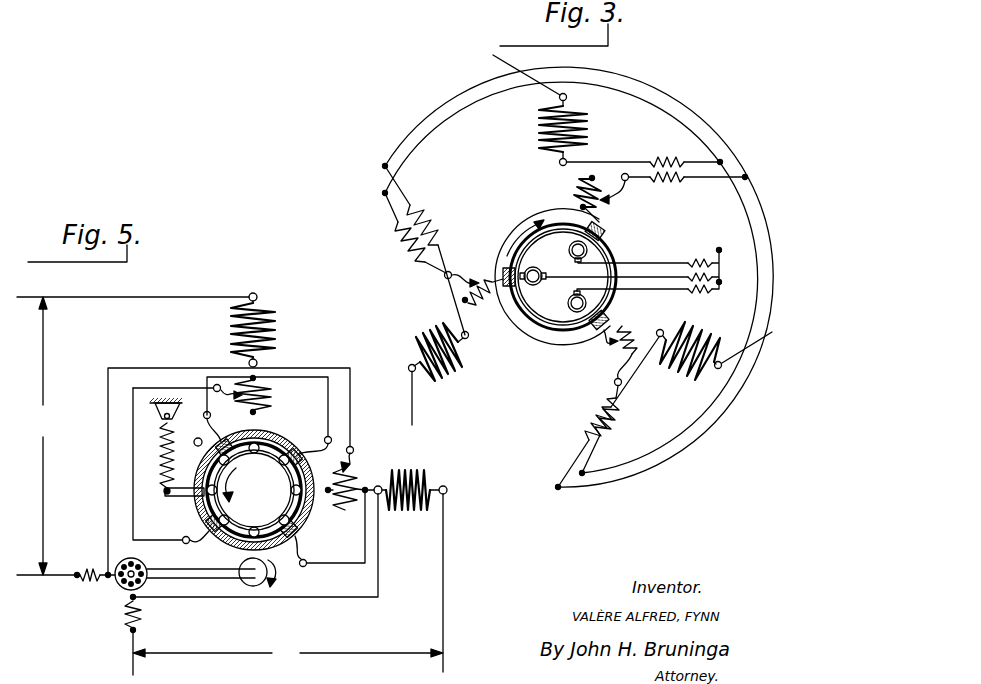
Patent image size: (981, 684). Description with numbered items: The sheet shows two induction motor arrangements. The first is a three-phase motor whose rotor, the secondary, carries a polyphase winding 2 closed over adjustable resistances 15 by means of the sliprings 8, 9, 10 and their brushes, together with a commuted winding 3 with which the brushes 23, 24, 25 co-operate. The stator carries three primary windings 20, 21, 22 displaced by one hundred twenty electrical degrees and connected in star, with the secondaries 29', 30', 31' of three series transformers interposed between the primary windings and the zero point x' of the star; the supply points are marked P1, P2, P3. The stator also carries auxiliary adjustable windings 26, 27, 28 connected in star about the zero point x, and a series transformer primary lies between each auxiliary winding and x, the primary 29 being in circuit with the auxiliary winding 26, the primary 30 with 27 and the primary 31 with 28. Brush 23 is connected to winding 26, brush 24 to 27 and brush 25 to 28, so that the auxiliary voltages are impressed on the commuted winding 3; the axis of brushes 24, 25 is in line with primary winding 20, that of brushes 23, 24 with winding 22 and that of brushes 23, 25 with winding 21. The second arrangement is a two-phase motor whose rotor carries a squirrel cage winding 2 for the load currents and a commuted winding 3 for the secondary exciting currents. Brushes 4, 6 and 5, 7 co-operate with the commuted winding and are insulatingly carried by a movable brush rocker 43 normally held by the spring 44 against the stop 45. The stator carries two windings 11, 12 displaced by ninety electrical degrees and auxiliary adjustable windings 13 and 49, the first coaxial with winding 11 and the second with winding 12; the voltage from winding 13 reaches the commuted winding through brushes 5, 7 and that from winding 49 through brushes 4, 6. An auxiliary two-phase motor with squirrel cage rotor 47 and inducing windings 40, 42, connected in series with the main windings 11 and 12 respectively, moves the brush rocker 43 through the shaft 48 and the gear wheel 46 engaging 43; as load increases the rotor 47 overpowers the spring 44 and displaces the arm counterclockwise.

In FIG. 3, the power terminal / point P1 is at (515, 71).
In FIG. 5, the power terminal / point P1 is at (37, 436).
In FIG. 3, the power terminal / point P2 is at (747, 350).
In FIG. 5, the power terminal / point P2 is at (288, 653).
In FIG. 3, the power terminal / point P3 is at (422, 398).
In FIG. 3, the zero point of auxiliary star x is at (578, 278).
In FIG. 3, the zero point of primary star x' is at (570, 278).
In FIG. 3, the rotor winding 2 is at (607, 250).
In FIG. 5, the rotor winding 2 is at (238, 524).
In FIG. 3, the commuted winding 3 is at (548, 331).
In FIG. 5, the commuted winding 3 is at (197, 504).
In FIG. 5, the brush 4 is at (296, 452).
In FIG. 5, the brush 5 is at (230, 443).
In FIG. 5, the brush 6 is at (206, 527).
In FIG. 5, the brush 7 is at (290, 546).
In FIG. 3, the slipring 8 is at (570, 251).
In FIG. 3, the slipring 9 is at (533, 284).
In FIG. 3, the slipring 10 is at (568, 304).
In FIG. 5, the main motor winding 11 is at (410, 571).
In FIG. 5, the main motor winding 12 is at (265, 330).
In FIG. 5, the auxiliary adjustable winding 13 is at (356, 478).
In FIG. 3, the adjustable resistances 15 is at (643, 271).
In FIG. 3, the primary winding 20 is at (575, 126).
In FIG. 3, the primary winding 21 is at (689, 359).
In FIG. 3, the primary winding 22 is at (430, 348).
In FIG. 3, the brush 23 is at (503, 268).
In FIG. 3, the brush 24 is at (601, 227).
In FIG. 3, the brush 25 is at (593, 336).
In FIG. 3, the auxiliary stator winding 26 is at (582, 193).
In FIG. 3, the auxiliary stator winding 27 is at (626, 348).
In FIG. 3, the auxiliary stator winding 28 is at (473, 304).
In FIG. 3, the series transformer primary 29 is at (684, 186).
In FIG. 3, the series transformer secondary 29' is at (640, 149).
In FIG. 3, the series transformer primary 30 is at (608, 412).
In FIG. 3, the series transformer secondary 30' is at (611, 429).
In FIG. 3, the series transformer primary 31 is at (427, 252).
In FIG. 3, the series transformer secondary 31' is at (414, 236).
In FIG. 5, the inducing winding 40 is at (122, 638).
In FIG. 5, the inducing winding 42 is at (66, 584).
In FIG. 5, the brush rocker 43 is at (314, 526).
In FIG. 5, the spring 44 is at (156, 455).
In FIG. 5, the stop 45 is at (184, 467).
In FIG. 5, the gear wheel 46 is at (261, 589).
In FIG. 5, the squirrel cage rotor 47 is at (115, 558).
In FIG. 5, the shaft 48 is at (188, 578).
In FIG. 5, the auxiliary adjustable winding 49 is at (232, 410).